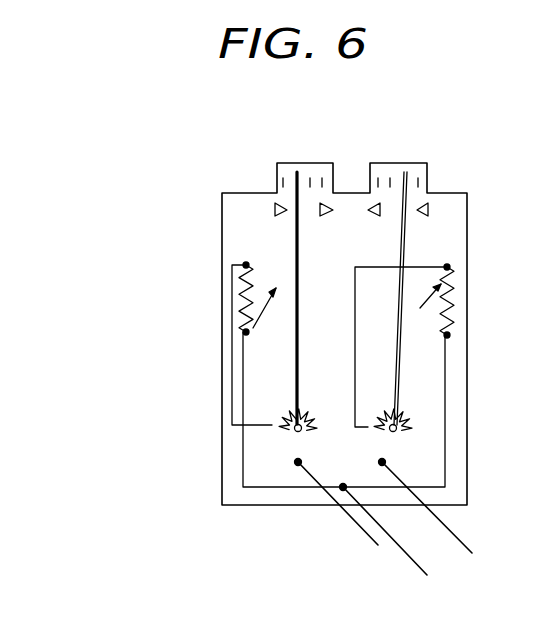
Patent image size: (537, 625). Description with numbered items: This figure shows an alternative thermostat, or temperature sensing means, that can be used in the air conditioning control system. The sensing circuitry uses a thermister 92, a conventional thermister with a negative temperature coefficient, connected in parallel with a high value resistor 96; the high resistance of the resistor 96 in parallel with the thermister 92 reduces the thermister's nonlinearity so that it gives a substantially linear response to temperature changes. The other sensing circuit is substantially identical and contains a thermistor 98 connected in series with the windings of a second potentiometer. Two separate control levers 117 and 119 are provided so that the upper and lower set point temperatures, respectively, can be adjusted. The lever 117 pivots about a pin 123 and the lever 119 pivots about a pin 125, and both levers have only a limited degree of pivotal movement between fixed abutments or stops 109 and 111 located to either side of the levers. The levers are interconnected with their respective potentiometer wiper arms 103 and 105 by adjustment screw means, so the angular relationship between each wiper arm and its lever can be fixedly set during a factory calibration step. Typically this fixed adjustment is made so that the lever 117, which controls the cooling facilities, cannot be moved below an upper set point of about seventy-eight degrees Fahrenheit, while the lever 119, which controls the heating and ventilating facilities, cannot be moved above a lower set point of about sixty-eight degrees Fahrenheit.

The thermister 92 is at (265, 292).
The high value resistor 96 is at (245, 318).
The thermistor 98 is at (422, 308).
The potentiometer wiper arm 103 is at (377, 418).
The potentiometer wiper arm 105 is at (284, 419).
The fixed abutment or stop 109 is at (275, 209).
The fixed abutment or stop 111 is at (428, 210).
The control lever 117 is at (402, 256).
The control lever 119 is at (300, 258).
The pin 123 is at (397, 430).
The pin 125 is at (294, 431).